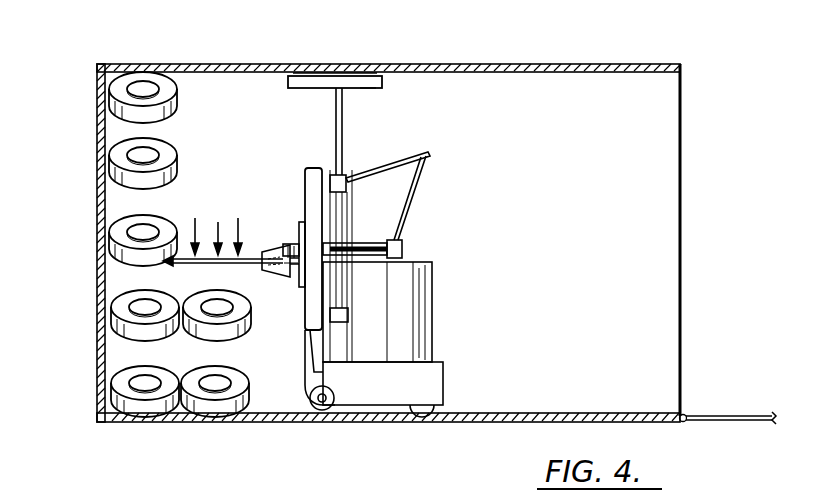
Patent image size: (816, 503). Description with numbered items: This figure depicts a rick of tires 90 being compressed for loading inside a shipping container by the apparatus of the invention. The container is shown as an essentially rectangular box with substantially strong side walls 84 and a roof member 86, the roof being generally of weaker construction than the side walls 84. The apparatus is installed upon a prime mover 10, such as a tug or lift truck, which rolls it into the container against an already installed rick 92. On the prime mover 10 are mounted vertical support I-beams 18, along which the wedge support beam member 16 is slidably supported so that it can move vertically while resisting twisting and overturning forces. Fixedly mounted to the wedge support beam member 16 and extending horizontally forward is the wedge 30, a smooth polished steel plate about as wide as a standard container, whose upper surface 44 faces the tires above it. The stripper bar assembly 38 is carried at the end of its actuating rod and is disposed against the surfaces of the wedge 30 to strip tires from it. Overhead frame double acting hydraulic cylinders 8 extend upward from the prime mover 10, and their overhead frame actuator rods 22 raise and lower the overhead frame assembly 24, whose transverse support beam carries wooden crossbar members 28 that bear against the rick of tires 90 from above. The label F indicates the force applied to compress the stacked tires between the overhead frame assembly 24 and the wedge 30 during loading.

The overhead frame double acting hydraulic cylinder 8 is at (346, 203).
The prime mover 10 is at (445, 380).
The wedge support beam member 16 is at (289, 276).
The vertical support I-beam 18 is at (305, 194).
The overhead frame actuator rod 22 is at (336, 131).
The overhead frame assembly 24 is at (288, 80).
The crossbar member 28 is at (370, 88).
The wedge 30 is at (234, 319).
The stripper bar assembly 38 is at (276, 250).
The upper surface 44 is at (218, 221).
The side wall 84 is at (97, 177).
The roof member 86 is at (482, 64).
The rick of tires 90 is at (258, 320).
The already installed rick 92 is at (178, 150).
The force F is at (372, 242).